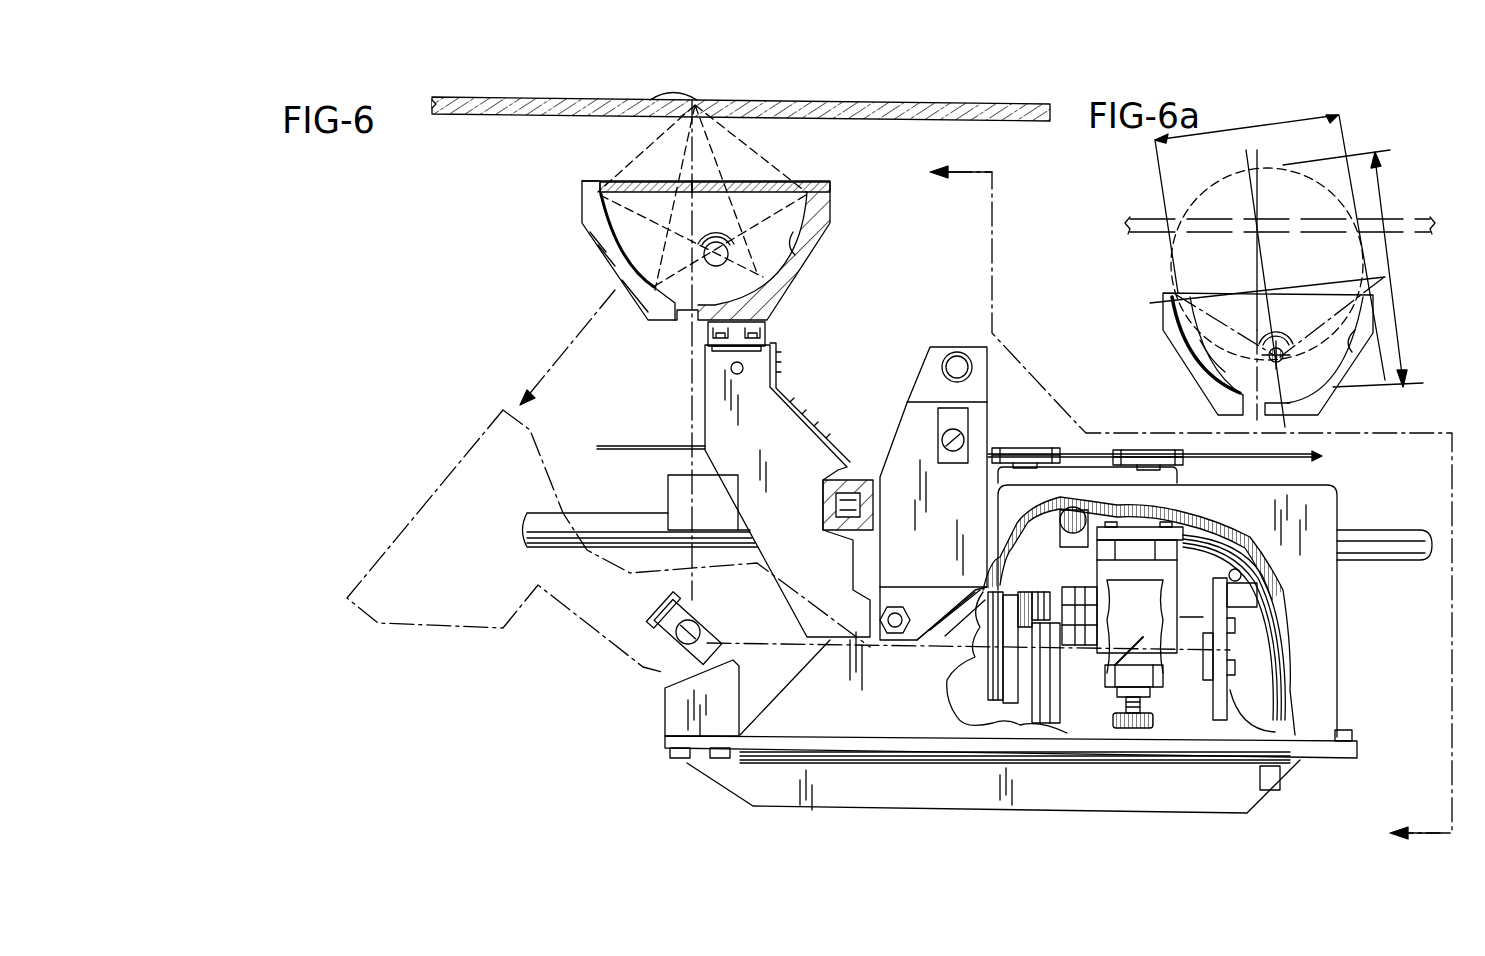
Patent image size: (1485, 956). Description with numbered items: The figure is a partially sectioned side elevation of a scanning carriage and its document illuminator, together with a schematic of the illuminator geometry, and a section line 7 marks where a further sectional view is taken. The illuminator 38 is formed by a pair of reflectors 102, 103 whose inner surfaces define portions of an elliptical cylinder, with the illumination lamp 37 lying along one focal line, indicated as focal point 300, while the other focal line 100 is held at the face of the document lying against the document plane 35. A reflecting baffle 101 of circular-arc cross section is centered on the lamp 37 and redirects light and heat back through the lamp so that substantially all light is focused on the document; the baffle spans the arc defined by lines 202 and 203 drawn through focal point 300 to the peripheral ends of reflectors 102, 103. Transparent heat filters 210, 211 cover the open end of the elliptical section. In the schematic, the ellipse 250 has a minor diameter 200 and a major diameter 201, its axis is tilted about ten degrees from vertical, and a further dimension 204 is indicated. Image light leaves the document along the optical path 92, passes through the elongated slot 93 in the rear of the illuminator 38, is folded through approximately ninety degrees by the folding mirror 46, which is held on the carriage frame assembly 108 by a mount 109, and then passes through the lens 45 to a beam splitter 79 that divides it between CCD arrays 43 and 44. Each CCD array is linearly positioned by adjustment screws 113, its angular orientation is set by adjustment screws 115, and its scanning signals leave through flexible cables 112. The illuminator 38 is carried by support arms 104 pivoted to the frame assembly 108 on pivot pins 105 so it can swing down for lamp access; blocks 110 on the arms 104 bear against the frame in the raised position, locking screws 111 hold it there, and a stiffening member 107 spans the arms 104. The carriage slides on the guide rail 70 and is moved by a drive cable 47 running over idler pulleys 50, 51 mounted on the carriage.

In FIG. 6, the section line 7- 7 is at (1194, 503).
In FIG. 6, the ceiling plate 35 is at (915, 135).
In FIG. 6A, the ceiling plate 35 is at (1147, 232).
In FIG. 6, the illumination lamp 37 is at (727, 264).
In FIG. 6A, the illumination lamp 37 is at (1266, 353).
In FIG. 6, the illuminator 38 is at (580, 212).
In FIG. 6, the CCD array 43 is at (1090, 597).
In FIG. 6, the CCD array 44 is at (1200, 657).
In FIG. 6, the lens 45 is at (990, 724).
In FIG. 6, the folding mirror 46 is at (665, 614).
In FIG. 6, the drive cable 47 is at (1297, 462).
In FIG. 6, the idler pulley 50 is at (1140, 450).
In FIG. 6, the idler pulley 51 is at (1022, 448).
In FIG. 6, the guide rail 70 is at (1377, 530).
In FIG. 6, the beam splitter 79 is at (1120, 673).
In FIG. 6, the optical path 92 is at (690, 355).
In FIG. 6A, the optical path 92 is at (1200, 382).
In FIG. 6, the elongated slot 93 is at (683, 314).
In FIG. 6, the focal point 100 is at (690, 108).
In FIG. 6A, the focal point 100 is at (1258, 218).
In FIG. 6, the reflecting baffle 101 is at (713, 233).
In FIG. 6A, the reflecting baffle 101 is at (1286, 353).
In FIG. 6, the reflector 102 is at (618, 248).
In FIG. 6A, the reflector 102 is at (1205, 342).
In FIG. 6, the reflector 103 is at (812, 233).
In FIG. 6A, the reflector 103 is at (1378, 332).
In FIG. 6, the support arm 104 is at (815, 448).
In FIG. 6, the pivot pin 105 is at (905, 630).
In FIG. 6, the stiffening member 107 is at (790, 385).
In FIG. 6, the carriage frame assembly 108 is at (665, 742).
In FIG. 6, the mount 109 is at (668, 712).
In FIG. 6, the block 110 is at (847, 480).
In FIG. 6, the locking screw 111 is at (817, 495).
In FIG. 6, the flexible cable 112 is at (1272, 702).
In FIG. 6, the adjustment screw 113 is at (1113, 720).
In FIG. 6, the adjustment screw 115 is at (1079, 506).
In FIG. 6A, the minor diameter 200 is at (1265, 128).
In FIG. 6A, the major diameter 201 is at (1390, 255).
In FIG. 6A, the line 202 is at (1150, 290).
In FIG. 6A, the line 203 is at (1385, 295).
In FIG. 6A, the height dimension 204 is at (1330, 418).
In FIG. 6, the heat filter 210 is at (645, 190).
In FIG. 6, the heat filter 211 is at (770, 190).
In FIG. 6A, the ellipse 250 is at (1332, 192).
In FIG. 6A, the focal point 300 is at (1230, 372).